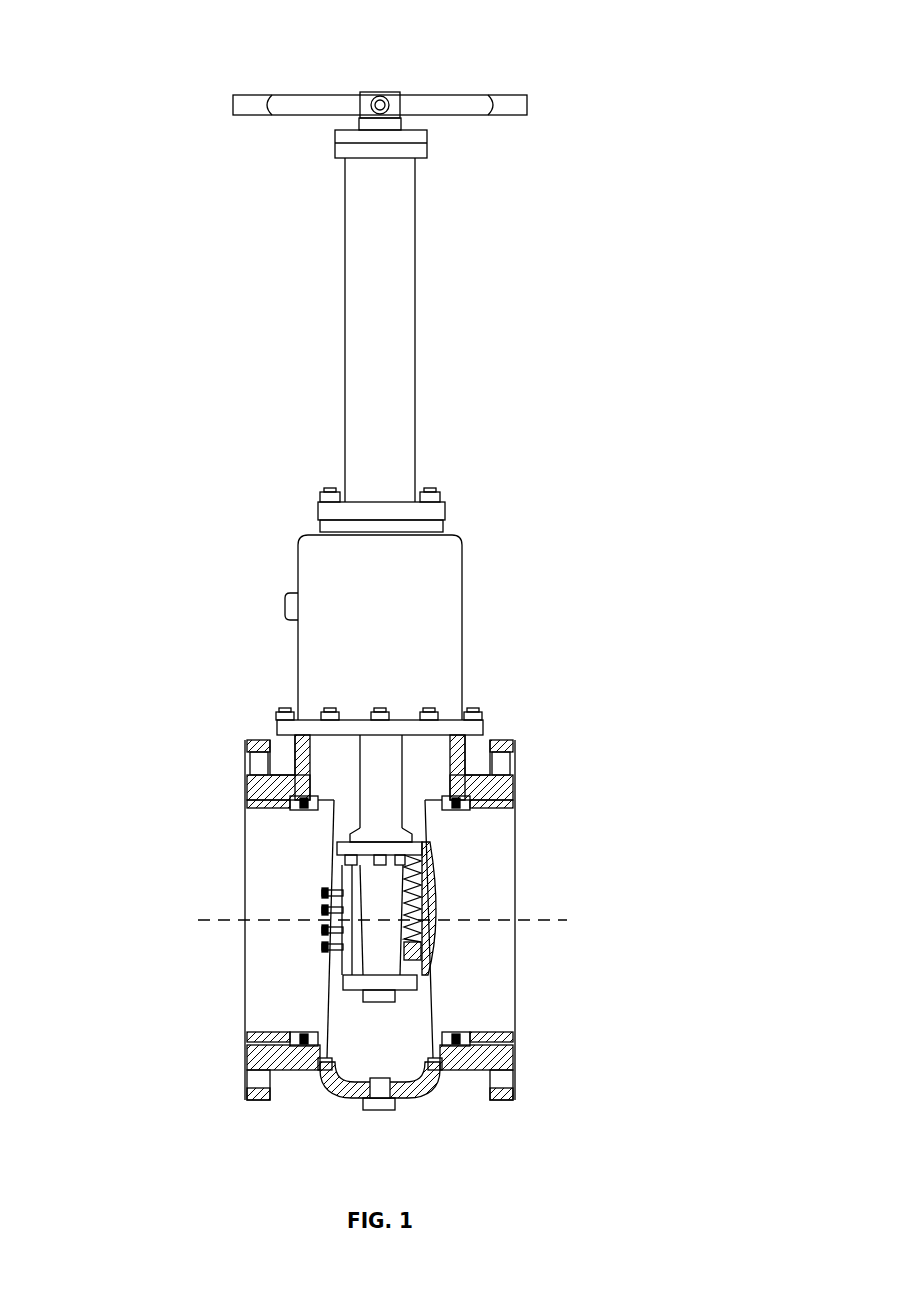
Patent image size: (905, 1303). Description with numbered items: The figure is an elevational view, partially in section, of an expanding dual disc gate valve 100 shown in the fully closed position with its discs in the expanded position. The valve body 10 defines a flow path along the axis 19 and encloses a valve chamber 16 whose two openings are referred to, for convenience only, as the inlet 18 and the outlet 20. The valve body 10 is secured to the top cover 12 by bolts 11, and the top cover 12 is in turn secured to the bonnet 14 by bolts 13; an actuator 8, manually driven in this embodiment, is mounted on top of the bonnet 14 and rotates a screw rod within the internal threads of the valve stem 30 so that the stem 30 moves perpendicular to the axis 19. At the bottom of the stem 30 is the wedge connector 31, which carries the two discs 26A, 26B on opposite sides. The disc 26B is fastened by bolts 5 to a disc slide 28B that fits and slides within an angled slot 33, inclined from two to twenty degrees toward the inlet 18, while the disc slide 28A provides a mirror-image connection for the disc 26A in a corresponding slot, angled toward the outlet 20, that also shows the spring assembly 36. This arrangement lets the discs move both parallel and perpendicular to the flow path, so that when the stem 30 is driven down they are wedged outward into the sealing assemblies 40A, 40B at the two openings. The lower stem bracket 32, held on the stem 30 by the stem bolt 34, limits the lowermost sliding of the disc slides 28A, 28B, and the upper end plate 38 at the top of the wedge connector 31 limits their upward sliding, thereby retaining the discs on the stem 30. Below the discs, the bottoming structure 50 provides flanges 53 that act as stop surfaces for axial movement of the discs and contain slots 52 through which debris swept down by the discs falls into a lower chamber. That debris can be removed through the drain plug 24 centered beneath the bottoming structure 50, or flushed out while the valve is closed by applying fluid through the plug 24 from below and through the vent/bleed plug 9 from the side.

The expanding dual disc gate valve 100 is at (117, 86).
The actuator 8 is at (258, 95).
The bonnet 14 is at (345, 280).
The bolts 13 is at (320, 492).
The top cover 12 is at (298, 560).
The vent/bleed plug 9 is at (285, 606).
The bolts 11 is at (430, 710).
The valve stem 30 is at (365, 780).
The upper end plate 38 is at (337, 850).
The wedge connector 31 is at (432, 885).
The spring assembly 36 is at (425, 870).
The angled slot 33 is at (342, 880).
The disc slide 28B is at (322, 893).
The bolts 5 is at (322, 946).
The lower stem bracket 32 is at (343, 980).
The stem bolt 34 is at (395, 997).
The valve body 10 is at (505, 775).
The inlet 18 is at (250, 835).
The outlet 20 is at (518, 885).
The sealing assembly 40B is at (300, 772).
The sealing assembly 40A is at (460, 790).
The disc 26B is at (320, 998).
The disc 26A is at (440, 968).
The valve chamber 16 is at (335, 1035).
The flanges 53 is at (448, 1068).
The slots 52 is at (325, 1068).
The bottoming structure 50 is at (405, 1075).
The drain plug 24 is at (385, 1105).
The disc slide 28A is at (438, 925).
The axis 19 is at (548, 910).